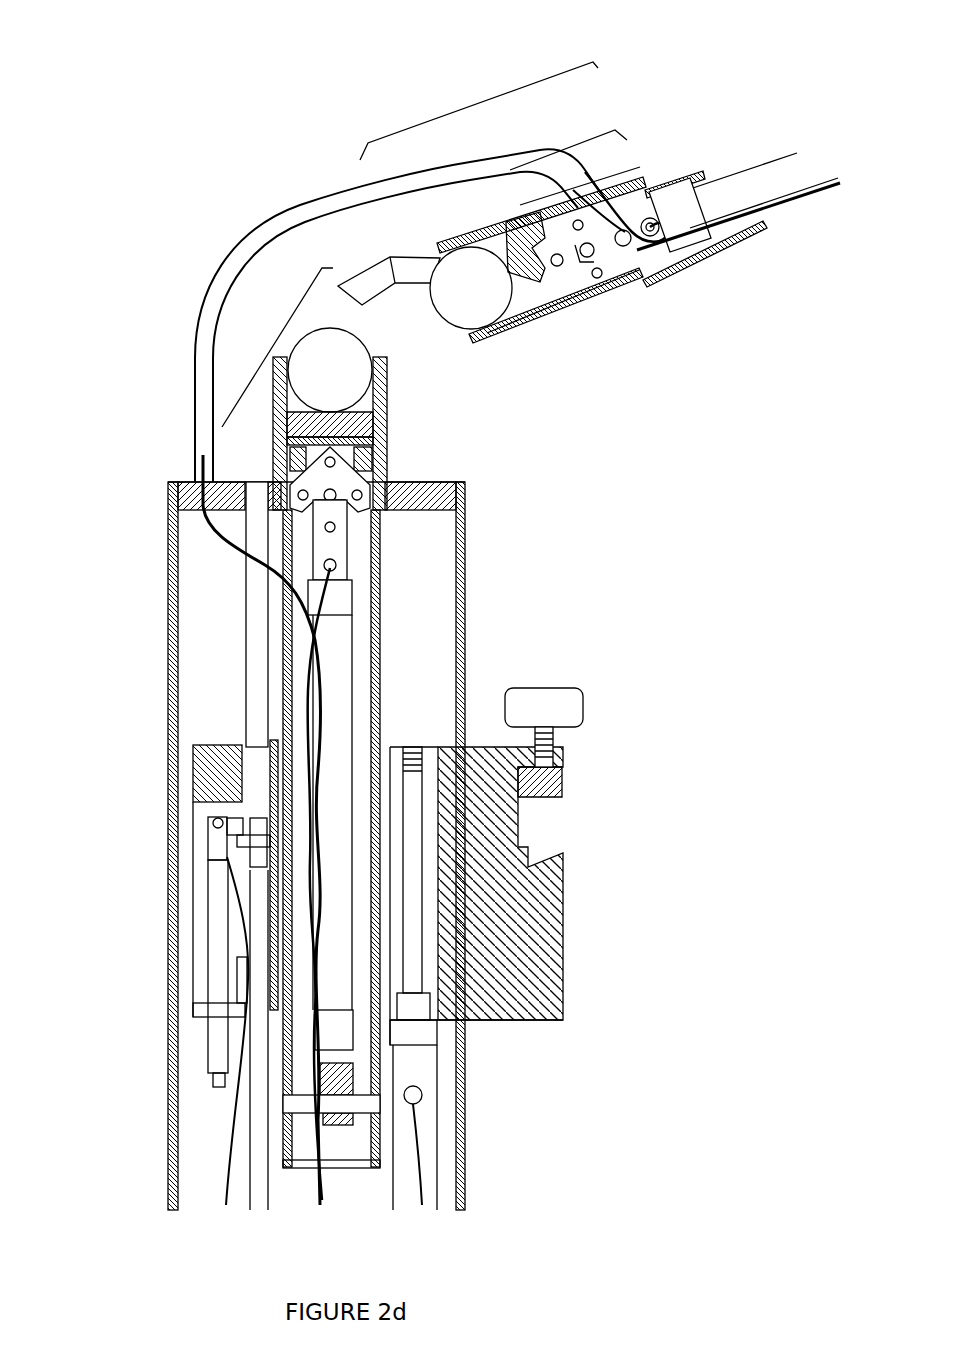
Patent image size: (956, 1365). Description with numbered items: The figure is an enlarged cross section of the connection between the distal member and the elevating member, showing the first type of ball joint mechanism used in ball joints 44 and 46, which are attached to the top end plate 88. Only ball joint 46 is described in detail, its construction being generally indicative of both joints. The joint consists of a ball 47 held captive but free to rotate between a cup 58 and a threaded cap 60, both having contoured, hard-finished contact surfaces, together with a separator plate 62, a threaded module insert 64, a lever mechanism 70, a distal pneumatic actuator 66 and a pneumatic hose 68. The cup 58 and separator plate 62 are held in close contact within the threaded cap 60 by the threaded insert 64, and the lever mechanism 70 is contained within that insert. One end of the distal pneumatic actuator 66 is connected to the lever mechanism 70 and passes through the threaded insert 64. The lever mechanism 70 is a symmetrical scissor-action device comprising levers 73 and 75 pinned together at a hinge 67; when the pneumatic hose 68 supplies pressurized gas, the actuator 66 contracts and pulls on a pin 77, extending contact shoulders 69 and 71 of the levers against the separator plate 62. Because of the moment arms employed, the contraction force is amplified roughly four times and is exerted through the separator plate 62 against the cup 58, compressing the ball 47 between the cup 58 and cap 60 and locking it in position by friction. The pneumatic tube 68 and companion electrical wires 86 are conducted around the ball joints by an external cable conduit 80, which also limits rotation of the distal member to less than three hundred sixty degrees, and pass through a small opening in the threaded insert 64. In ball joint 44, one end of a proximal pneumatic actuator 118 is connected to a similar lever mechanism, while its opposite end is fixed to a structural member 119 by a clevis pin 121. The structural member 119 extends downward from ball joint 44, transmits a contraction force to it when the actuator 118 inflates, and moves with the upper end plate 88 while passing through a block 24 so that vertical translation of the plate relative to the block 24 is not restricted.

The block 24 is at (554, 949).
The ball joint 44 is at (355, 314).
The ball joint 46 is at (448, 81).
The ball 47 is at (397, 318).
The cup 58 is at (541, 293).
The threaded cap 60 is at (457, 330).
The separator plate 62 is at (501, 239).
The threaded module insert 64 is at (705, 244).
The distal pneumatic actuator 66 is at (723, 173).
The hinge 67 is at (591, 318).
The pneumatic hose 68 is at (635, 180).
The contact shoulder 69 is at (563, 331).
The lever mechanism 70 is at (568, 135).
The contact shoulder 71 is at (623, 238).
The lever 73 is at (556, 202).
The lever 75 is at (613, 300).
The pin 77 is at (640, 303).
The external cable conduit 80 is at (380, 293).
The electrical wires 86 is at (738, 236).
The top end plate 88 is at (171, 806).
The proximal pneumatic actuator 118 is at (439, 839).
The structural member 119 is at (159, 846).
The clevis pin 121 is at (221, 1141).